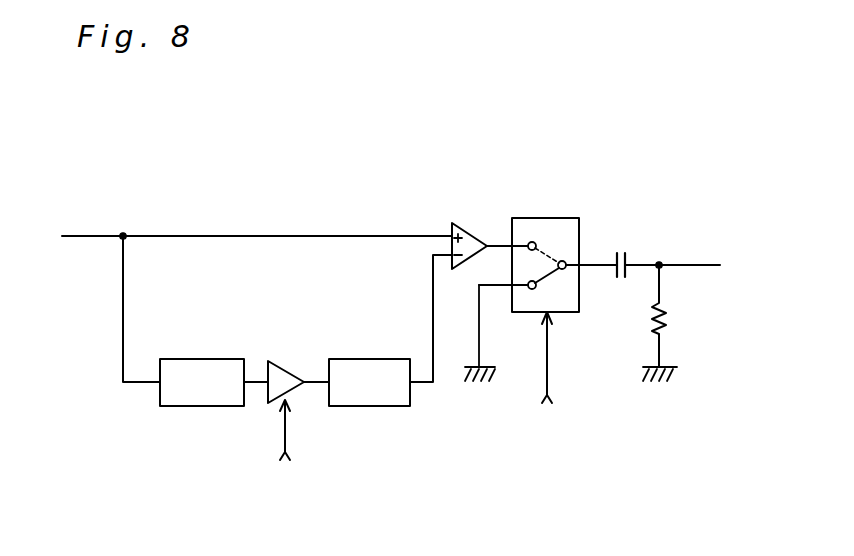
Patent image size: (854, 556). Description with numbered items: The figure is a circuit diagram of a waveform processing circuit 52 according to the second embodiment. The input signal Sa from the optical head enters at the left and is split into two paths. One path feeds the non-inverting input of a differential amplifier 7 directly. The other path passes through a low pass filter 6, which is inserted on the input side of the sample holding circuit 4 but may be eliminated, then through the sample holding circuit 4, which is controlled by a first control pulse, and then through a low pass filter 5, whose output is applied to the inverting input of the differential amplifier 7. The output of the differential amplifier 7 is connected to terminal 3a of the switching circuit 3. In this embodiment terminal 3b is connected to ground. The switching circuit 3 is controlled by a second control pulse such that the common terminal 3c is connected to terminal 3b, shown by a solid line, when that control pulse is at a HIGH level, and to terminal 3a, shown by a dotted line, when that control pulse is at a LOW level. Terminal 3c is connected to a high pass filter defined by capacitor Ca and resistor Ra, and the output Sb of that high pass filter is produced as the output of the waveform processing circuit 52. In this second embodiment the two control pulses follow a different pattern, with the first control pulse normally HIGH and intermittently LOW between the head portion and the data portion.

The waveform processing circuit 52 is at (344, 177).
The low pass filter 6 is at (193, 358).
The sample holding circuit 4 is at (283, 370).
The low pass filter 5 is at (366, 359).
The differential amplifier 7 is at (474, 228).
The switching circuit 3 is at (558, 218).
The terminal 3a is at (532, 241).
The terminal 3b is at (531, 290).
The terminal 3c is at (566, 261).